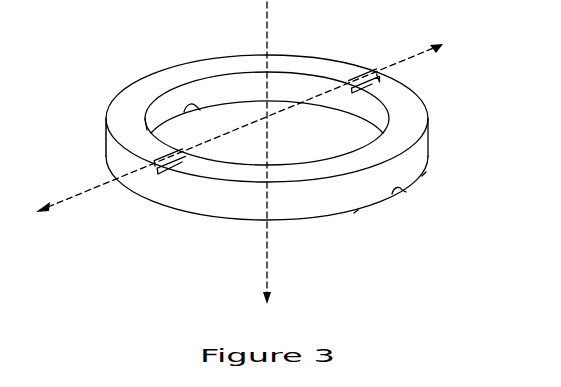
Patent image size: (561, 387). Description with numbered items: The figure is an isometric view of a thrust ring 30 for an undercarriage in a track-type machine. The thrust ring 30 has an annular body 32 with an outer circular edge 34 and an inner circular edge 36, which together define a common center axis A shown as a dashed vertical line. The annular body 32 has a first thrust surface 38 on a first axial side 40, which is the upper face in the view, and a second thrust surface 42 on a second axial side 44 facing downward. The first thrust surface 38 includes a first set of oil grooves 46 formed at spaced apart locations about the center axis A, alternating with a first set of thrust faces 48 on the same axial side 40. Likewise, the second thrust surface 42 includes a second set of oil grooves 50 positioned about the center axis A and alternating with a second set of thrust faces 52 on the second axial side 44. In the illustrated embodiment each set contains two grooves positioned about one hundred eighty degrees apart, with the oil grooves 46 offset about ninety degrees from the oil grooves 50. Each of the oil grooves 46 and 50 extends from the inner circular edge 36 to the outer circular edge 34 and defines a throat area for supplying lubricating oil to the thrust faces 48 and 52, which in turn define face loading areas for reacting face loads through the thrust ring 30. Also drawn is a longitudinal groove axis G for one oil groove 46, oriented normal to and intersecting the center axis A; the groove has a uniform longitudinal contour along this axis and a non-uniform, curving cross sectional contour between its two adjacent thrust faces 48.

The thrust ring 30 is at (309, 137).
The annular body 32 is at (298, 210).
The outer circular edge 34 is at (430, 150).
The inner circular edge 36 is at (203, 64).
The first thrust surface 38 is at (340, 70).
The first axial side 40 is at (287, 50).
The second thrust surface 42 is at (134, 195).
The second axial side 44 is at (226, 223).
The first set of oil grooves 46 is at (385, 81).
The first set of thrust faces 48 is at (122, 108).
The second set of oil grooves 50 is at (200, 108).
The second set of thrust faces 52 is at (358, 212).
The center axis A is at (263, 288).
The longitudinal groove axis G is at (58, 213).